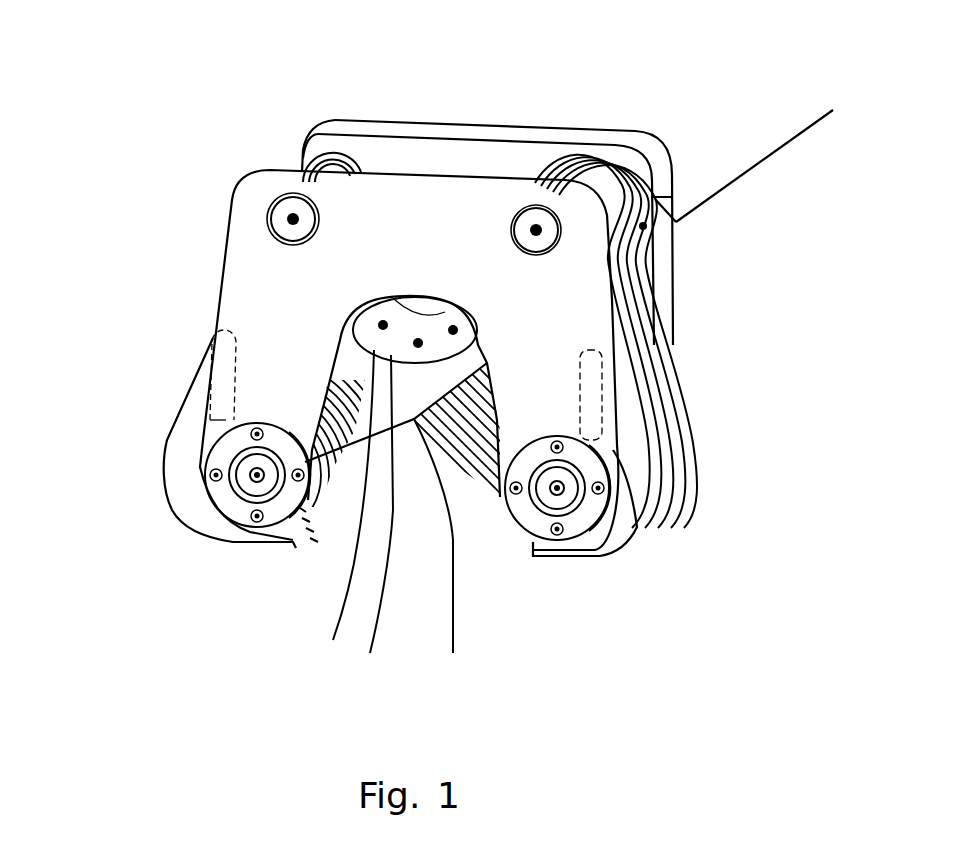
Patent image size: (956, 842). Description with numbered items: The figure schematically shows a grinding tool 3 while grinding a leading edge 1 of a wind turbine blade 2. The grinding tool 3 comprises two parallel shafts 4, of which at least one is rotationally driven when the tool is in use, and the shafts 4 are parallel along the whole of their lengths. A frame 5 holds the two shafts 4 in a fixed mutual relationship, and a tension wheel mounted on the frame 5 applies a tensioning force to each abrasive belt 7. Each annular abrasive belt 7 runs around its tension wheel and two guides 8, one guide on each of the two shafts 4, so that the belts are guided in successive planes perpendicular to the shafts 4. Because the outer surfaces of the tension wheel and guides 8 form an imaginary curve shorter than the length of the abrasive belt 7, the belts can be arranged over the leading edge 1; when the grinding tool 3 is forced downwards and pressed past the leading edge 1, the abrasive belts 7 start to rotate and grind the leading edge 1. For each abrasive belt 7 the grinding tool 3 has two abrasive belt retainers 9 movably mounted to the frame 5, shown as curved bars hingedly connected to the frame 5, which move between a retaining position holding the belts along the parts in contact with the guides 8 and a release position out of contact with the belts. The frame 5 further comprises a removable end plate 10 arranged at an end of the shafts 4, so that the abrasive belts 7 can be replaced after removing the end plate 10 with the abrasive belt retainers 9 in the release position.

The leading edge 1 is at (773, 152).
The wind turbine blade 2 is at (425, 608).
The grinding tool 3 is at (177, 154).
The shafts 4 is at (245, 478).
The frame 5 is at (497, 130).
The abrasive belt 7 is at (433, 417).
The guides 8 is at (333, 480).
The abrasive belt retainers 9 is at (182, 463).
The removable end plate 10 is at (256, 276).